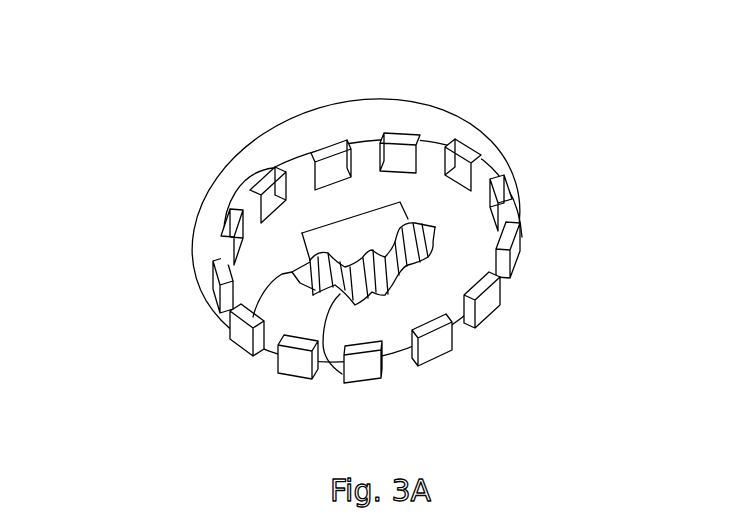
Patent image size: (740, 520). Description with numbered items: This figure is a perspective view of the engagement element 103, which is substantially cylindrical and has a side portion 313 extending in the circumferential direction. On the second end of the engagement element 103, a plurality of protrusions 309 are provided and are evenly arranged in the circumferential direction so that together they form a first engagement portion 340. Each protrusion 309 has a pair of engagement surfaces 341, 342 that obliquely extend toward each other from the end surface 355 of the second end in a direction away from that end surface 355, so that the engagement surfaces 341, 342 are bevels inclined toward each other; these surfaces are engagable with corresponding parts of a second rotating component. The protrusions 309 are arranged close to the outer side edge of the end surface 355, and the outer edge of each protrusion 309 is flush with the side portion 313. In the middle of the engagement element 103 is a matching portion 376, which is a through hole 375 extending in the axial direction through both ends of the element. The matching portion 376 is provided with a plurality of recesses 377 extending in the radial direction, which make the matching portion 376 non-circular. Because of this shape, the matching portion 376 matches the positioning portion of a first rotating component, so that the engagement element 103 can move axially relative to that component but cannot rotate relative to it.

The engagement element 103 is at (364, 232).
The side portion 313 is at (212, 212).
The matching portion 376 is at (350, 236).
The through hole 375 is at (236, 338).
The recesses 377 is at (328, 362).
The engagement surface 341 is at (350, 370).
The engagement surface 342 is at (383, 360).
The first engagement portion 340 is at (488, 307).
The end surface 355 is at (460, 276).
The protrusions 309 is at (513, 256).